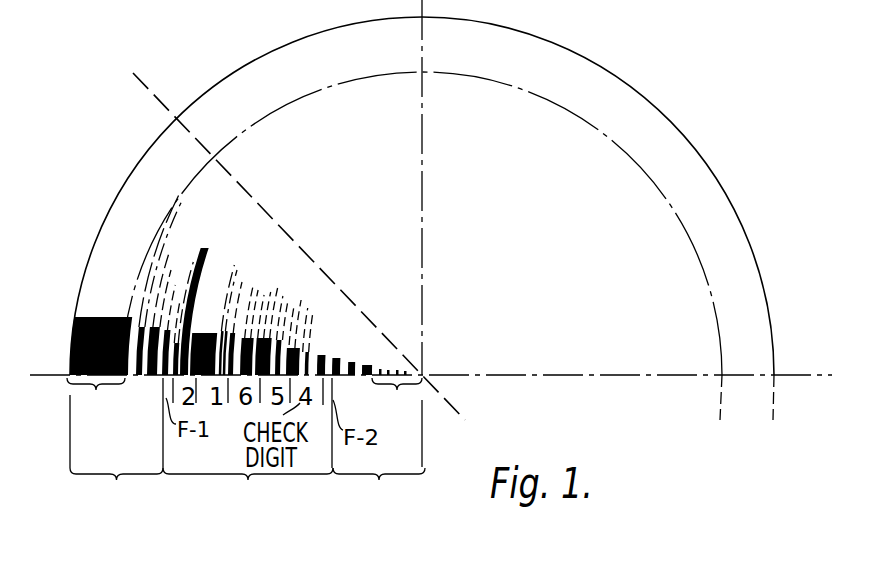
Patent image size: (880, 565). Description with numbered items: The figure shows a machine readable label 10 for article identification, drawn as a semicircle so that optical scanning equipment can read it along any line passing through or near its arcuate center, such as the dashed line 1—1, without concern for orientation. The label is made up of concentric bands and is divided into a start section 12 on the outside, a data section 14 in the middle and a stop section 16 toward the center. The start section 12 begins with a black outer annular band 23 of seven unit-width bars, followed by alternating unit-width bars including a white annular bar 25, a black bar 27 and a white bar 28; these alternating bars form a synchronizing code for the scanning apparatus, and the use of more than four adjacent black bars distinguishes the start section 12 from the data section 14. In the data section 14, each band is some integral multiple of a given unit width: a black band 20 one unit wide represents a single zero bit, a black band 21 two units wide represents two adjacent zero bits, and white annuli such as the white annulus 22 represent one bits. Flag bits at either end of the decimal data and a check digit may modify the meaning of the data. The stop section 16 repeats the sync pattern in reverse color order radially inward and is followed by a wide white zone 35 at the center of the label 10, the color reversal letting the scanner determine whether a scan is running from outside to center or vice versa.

The machine readable label 10 is at (256, 52).
The dashed line 1— 1 is at (146, 90).
The start section 12 is at (116, 447).
The data section 14 is at (248, 447).
The stop section 16 is at (379, 458).
The black band 20 is at (191, 262).
The black band 21 is at (283, 338).
The white annulus 22 is at (193, 305).
The black outer annular band 23 is at (99, 369).
The white annular bar 25 is at (133, 320).
The black bar 27 is at (135, 378).
The white bar 28 is at (157, 292).
The zone 35 is at (397, 397).